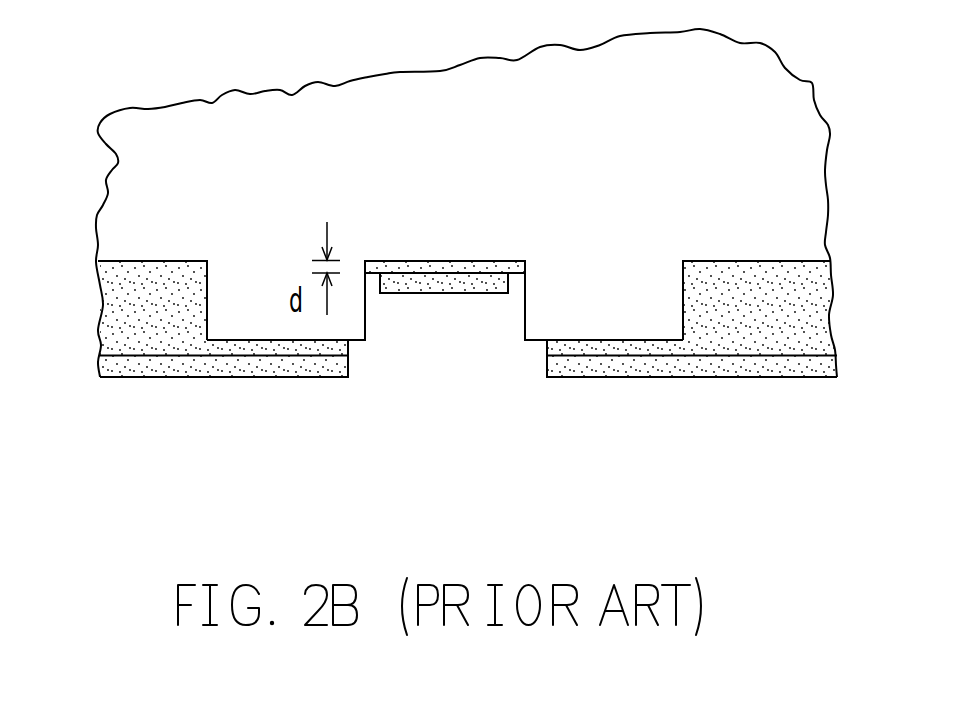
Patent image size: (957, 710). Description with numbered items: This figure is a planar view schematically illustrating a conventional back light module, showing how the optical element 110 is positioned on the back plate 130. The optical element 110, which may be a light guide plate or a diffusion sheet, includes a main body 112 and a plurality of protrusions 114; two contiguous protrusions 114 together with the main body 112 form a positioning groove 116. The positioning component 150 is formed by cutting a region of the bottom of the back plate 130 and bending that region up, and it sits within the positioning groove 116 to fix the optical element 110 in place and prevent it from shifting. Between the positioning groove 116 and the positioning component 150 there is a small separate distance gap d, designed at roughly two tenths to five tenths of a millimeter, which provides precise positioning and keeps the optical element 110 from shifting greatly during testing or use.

The optical element 110 is at (692, 382).
The main body 112 is at (747, 237).
The protrusions 114 is at (644, 317).
The positioning groove 116 is at (422, 312).
The back plate 130 is at (178, 362).
The positioning component 150 is at (482, 280).